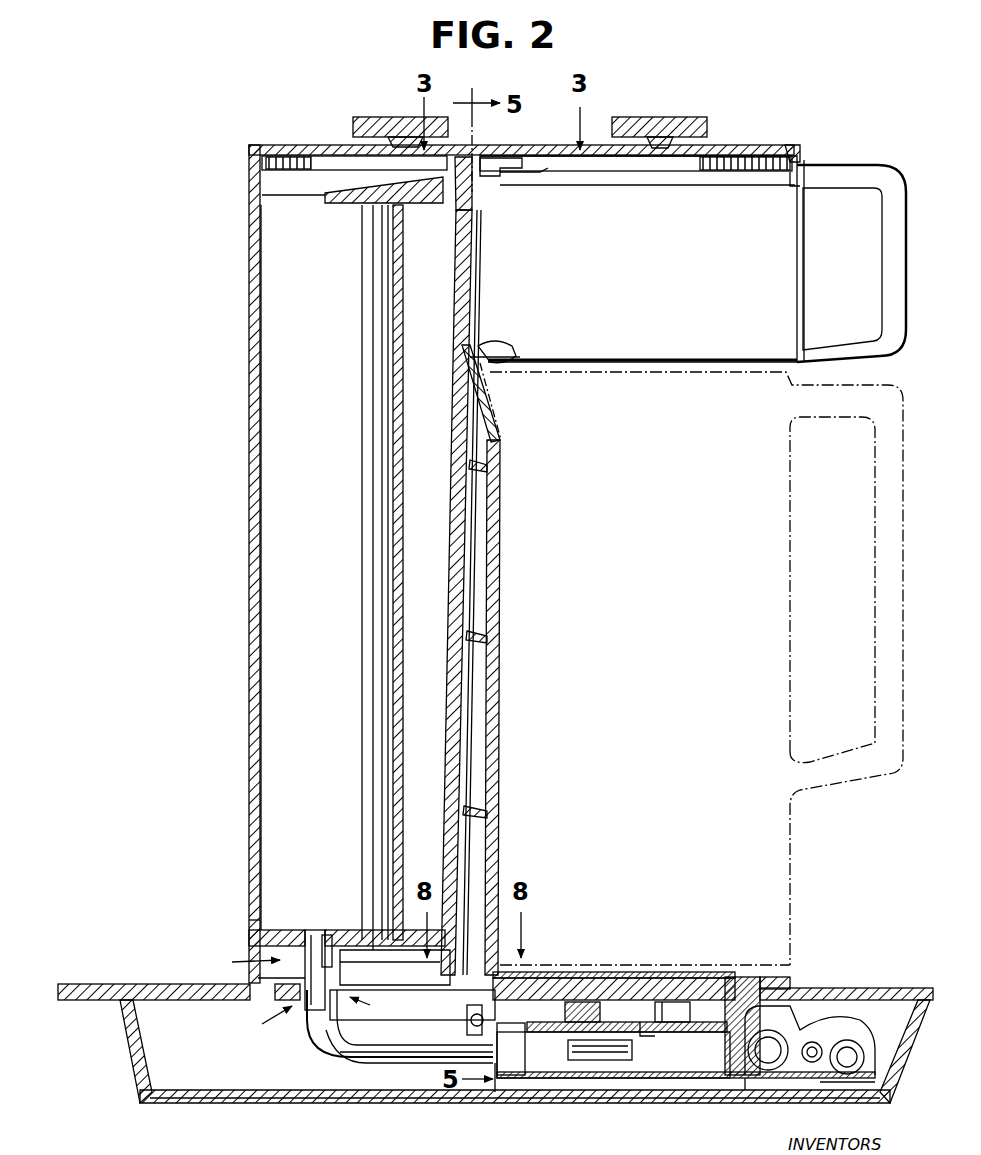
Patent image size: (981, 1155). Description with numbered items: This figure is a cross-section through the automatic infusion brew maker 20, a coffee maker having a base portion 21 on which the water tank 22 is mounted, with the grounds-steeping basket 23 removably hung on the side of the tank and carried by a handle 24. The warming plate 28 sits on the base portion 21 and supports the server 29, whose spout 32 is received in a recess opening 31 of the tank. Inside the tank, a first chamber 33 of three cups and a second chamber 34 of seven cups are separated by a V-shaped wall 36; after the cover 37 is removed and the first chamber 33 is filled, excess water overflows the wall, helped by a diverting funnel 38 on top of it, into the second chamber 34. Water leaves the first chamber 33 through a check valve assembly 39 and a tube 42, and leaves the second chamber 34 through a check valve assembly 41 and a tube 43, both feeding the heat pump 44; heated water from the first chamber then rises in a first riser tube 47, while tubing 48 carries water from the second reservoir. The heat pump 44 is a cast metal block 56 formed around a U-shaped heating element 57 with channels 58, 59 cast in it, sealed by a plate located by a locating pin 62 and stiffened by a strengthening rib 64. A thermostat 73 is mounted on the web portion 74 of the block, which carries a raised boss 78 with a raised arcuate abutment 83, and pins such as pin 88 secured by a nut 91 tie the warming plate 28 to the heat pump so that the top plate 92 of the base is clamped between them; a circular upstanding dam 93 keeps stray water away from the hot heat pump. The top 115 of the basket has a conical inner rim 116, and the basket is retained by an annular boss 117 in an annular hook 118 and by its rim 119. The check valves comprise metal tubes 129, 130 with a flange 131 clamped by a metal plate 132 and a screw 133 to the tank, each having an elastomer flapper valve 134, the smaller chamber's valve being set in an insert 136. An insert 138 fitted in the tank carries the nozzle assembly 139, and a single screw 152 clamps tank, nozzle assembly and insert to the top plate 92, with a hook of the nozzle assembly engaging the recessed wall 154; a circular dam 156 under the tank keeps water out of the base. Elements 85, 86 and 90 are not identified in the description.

The automatic infusion brew maker 20 is at (190, 272).
The base portion 21 is at (125, 1040).
The water tank 22 is at (249, 600).
The grounds-steeping basket 23 is at (642, 290).
The handle 24 is at (878, 276).
The warming plate 28 is at (568, 975).
The server 29 is at (790, 855).
The recess opening 31 is at (495, 425).
The spout 32 is at (488, 396).
The first chamber 33 is at (318, 390).
The second chamber 34 is at (439, 390).
The V-shaped wall 36 is at (393, 545).
The cover 37 is at (305, 145).
The diverting funnel 38 is at (333, 203).
The check valve assembly 39 is at (248, 996).
The check valve assembly 41 is at (412, 1006).
The tube 42 is at (318, 1038).
The tube 43 is at (348, 1066).
The heat pump 44 is at (540, 1085).
The first riser tube 47 is at (499, 592).
The tubing 48 is at (467, 1012).
The cast metal block 56 is at (648, 1080).
The heating element 57 is at (820, 1042).
The channel 58 is at (856, 1057).
The channel 59 is at (778, 1059).
The locating pin 62 is at (745, 1092).
The strengthening rib 64 is at (852, 1094).
The thermostat 73 is at (592, 1080).
The web portion 74 is at (535, 1042).
The raised boss 78 is at (565, 1012).
The raised arcuate abutment 83 is at (775, 1018).
The gasket 85 is at (610, 972).
The pedestal 86 is at (738, 975).
The pin 88 is at (675, 1012).
The base bottom 90 is at (220, 1103).
The nut 91 is at (658, 1030).
The top plate 92 is at (95, 984).
The circular upstanding dam 93 is at (778, 985).
The top 115 is at (720, 155).
The conical inner rim 116 is at (787, 185).
The annular boss 117 is at (500, 342).
The annular hook 118 is at (502, 366).
The rim 119 is at (500, 156).
The metal tube 129 is at (278, 1000).
The metal tube 130 is at (355, 965).
The flange 131 is at (305, 938).
The metal plate 132 is at (249, 942).
The screw 133 is at (373, 940).
The elastomer flapper valve 134 is at (322, 940).
The insert 136 is at (250, 920).
The insert 138 is at (500, 550).
The nozzle assembly 139 is at (528, 170).
The screw 152 is at (470, 1030).
The recessed wall 154 is at (455, 222).
The circular dam 156 is at (258, 978).